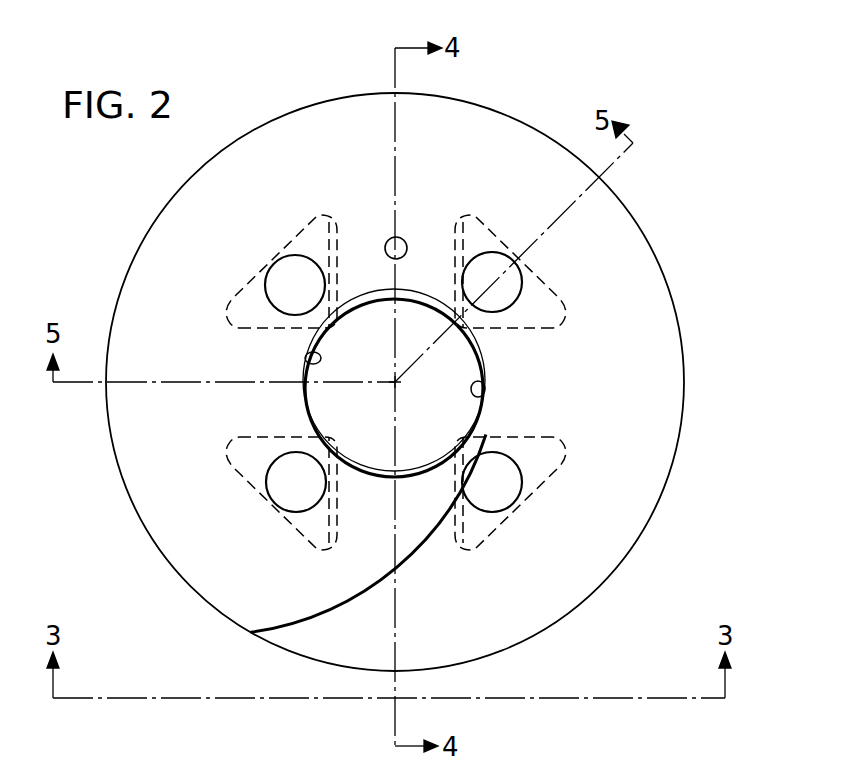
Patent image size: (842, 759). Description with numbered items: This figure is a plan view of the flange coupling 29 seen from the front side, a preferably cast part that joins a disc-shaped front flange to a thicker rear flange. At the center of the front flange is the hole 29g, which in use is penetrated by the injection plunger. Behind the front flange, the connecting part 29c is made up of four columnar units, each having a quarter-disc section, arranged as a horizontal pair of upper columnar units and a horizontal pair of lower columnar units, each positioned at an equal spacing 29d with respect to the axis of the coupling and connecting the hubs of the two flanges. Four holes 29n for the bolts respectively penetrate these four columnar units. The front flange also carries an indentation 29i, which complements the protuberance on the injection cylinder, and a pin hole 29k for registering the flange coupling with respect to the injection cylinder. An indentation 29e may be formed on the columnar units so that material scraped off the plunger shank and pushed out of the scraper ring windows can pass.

The flange coupling 29 is at (660, 208).
The pin hole 29k is at (405, 243).
The holes for the bolts 29n is at (514, 276).
The indentation 29i is at (305, 357).
The hole 29g is at (487, 390).
The connecting part 29c is at (505, 521).
The indentation 29e is at (452, 522).
The equal spacing 29d is at (377, 512).